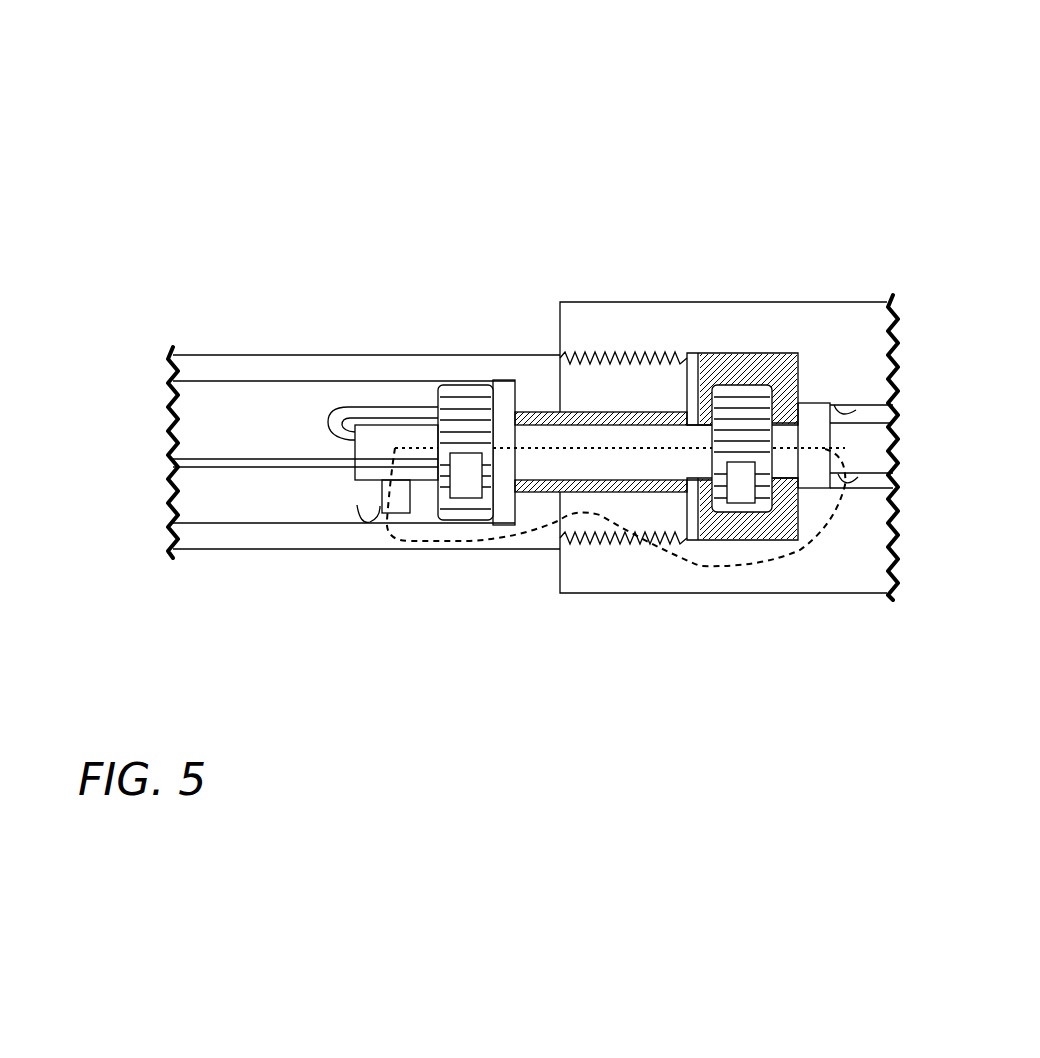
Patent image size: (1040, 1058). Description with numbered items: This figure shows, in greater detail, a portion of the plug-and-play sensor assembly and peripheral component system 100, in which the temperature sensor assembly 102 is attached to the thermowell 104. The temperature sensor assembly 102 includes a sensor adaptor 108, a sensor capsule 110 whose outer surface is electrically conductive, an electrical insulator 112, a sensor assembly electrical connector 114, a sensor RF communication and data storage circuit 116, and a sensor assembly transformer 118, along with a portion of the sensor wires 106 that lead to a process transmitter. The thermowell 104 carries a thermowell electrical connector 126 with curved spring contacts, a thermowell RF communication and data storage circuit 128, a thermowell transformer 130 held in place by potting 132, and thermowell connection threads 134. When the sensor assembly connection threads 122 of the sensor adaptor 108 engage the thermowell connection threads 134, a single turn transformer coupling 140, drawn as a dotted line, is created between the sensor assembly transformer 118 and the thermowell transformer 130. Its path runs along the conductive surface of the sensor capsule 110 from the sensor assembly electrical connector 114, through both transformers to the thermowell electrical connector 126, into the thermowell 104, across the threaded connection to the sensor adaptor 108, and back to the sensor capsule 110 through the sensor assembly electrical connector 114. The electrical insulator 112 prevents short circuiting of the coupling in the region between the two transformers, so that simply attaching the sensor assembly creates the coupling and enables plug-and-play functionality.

The sensor assembly and peripheral component system 100 is at (278, 163).
The temperature sensor assembly 102 is at (320, 553).
The thermowell 104 is at (869, 598).
The sensor wires 106 is at (400, 413).
The sensor adaptor 108 is at (423, 354).
The sensor capsule 110 is at (353, 479).
The electrical insulator 112 is at (578, 411).
The sensor assembly electrical connector 114 is at (397, 497).
The sensor RF communication and data storage circuit 116 is at (470, 488).
The sensor assembly transformer 118 is at (463, 385).
The sensor assembly connection threads 122 is at (617, 355).
The thermowell electrical connector 126 is at (833, 403).
The thermowell RF communication and data storage circuit 128 is at (740, 494).
The thermowell transformer 130 is at (718, 385).
The potting 132 is at (752, 354).
The thermowell connection threads 134 is at (623, 538).
The single turn transformer coupling 140 is at (838, 510).